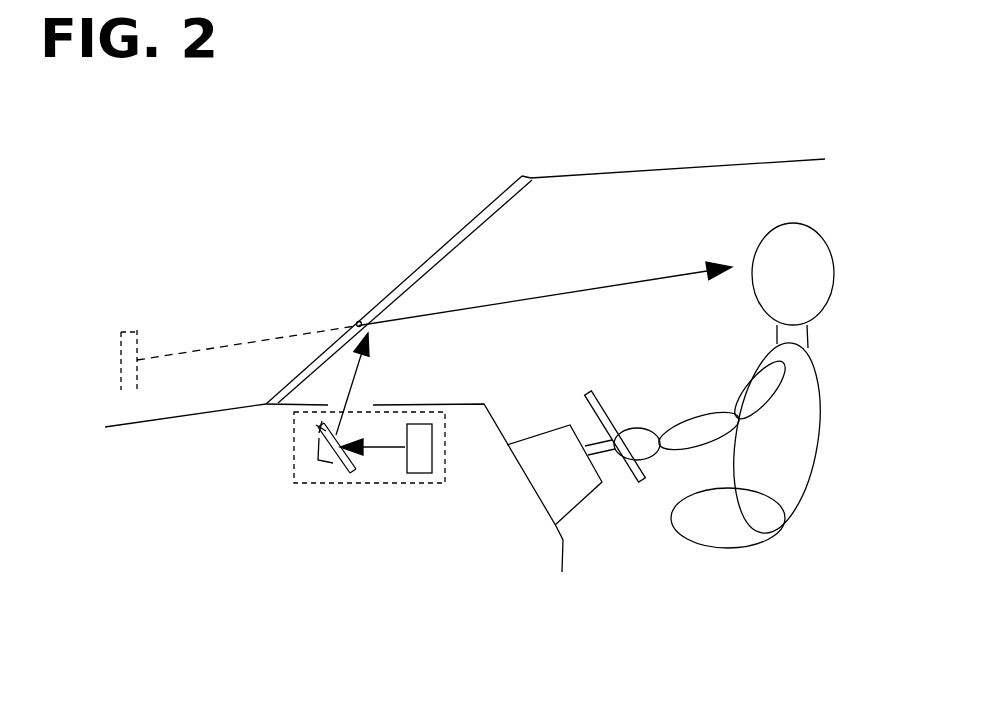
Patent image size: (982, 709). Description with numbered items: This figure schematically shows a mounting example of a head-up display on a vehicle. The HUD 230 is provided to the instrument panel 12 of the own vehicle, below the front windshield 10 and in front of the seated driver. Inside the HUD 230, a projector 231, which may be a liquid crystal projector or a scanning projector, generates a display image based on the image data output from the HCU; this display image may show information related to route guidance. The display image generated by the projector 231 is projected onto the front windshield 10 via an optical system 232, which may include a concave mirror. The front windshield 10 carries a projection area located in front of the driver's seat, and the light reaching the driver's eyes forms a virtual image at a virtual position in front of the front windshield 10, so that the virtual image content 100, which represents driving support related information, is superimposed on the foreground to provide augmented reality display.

The front windshield 10 is at (420, 263).
The instrument panel 12 is at (457, 403).
The virtual image content 100 is at (133, 330).
The head up display 230 is at (317, 473).
The projector 231 is at (420, 463).
The optical system 232 is at (316, 431).